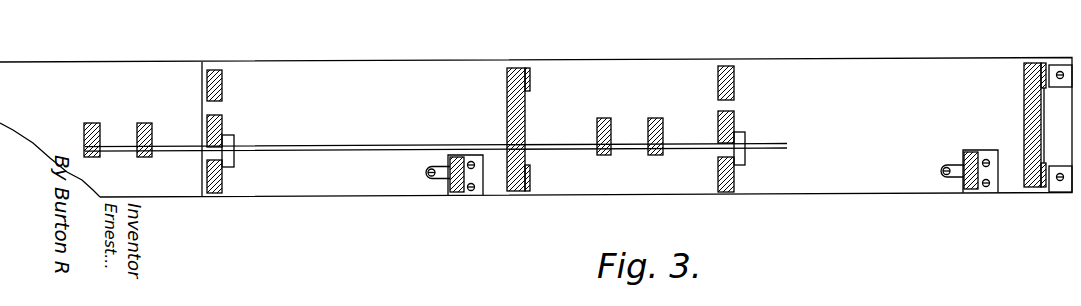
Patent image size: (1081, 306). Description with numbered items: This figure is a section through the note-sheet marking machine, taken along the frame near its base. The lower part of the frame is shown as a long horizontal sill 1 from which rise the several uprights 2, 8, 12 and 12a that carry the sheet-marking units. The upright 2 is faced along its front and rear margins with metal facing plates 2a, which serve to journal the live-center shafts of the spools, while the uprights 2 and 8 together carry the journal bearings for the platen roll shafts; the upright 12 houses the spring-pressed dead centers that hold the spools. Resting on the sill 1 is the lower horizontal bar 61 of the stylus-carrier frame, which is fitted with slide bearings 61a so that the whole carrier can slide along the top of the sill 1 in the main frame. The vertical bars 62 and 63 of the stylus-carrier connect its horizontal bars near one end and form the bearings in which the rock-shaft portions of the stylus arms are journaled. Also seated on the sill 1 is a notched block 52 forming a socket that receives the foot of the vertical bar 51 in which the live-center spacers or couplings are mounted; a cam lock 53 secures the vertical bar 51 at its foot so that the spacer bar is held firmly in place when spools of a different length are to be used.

The sill 1 is at (165, 68).
The upright 2 is at (507, 108).
The metal facing plate 2a is at (533, 81).
The upright 8 is at (224, 123).
The upright 12 is at (222, 183).
The upright 12a is at (762, 38).
The vertical bar 51 is at (447, 188).
The notched block 52 is at (480, 192).
The cam lock 53 is at (422, 176).
The lower horizontal bar 61 is at (436, 137).
The slide bearing 61a is at (234, 141).
The vertical bar 62 is at (88, 123).
The vertical bar 63 is at (140, 123).